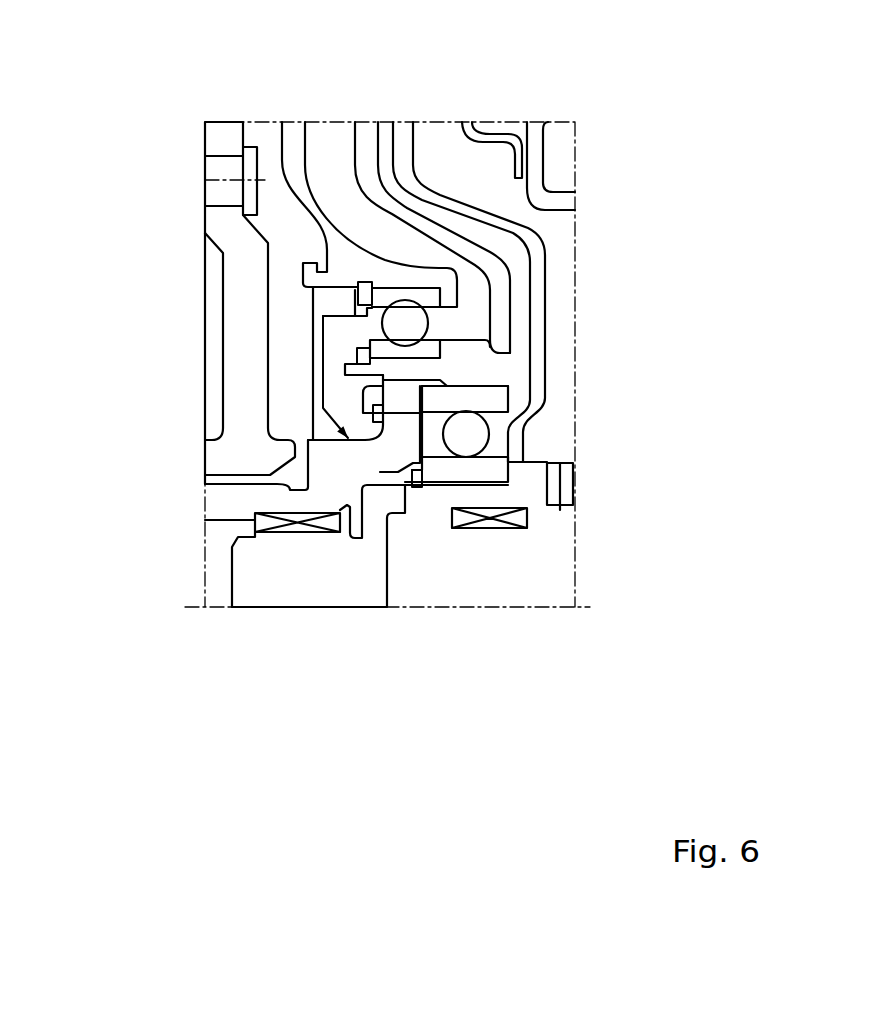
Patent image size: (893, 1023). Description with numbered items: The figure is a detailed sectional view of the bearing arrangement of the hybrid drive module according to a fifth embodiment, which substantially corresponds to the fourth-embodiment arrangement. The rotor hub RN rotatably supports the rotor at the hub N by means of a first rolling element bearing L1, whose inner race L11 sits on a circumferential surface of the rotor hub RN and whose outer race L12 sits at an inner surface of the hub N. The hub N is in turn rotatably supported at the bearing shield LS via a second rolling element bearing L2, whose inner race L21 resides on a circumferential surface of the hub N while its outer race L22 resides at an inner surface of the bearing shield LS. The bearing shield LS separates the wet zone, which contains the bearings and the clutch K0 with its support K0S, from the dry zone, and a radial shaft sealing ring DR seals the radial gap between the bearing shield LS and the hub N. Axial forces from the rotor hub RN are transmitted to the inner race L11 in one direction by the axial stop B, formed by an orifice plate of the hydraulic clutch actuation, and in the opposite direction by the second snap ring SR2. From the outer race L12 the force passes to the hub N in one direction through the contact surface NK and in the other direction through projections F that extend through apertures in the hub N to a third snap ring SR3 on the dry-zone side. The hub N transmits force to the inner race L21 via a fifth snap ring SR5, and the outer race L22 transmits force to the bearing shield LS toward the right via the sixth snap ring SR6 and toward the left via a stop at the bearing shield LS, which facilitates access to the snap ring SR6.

The bearing shield LS is at (293, 165).
The sixth snap ring SR6 is at (364, 285).
The outer race L22 is at (435, 298).
The clutch K0 support / housing K0S is at (478, 217).
The second rolling element bearing L2 is at (440, 320).
The inner race L21 is at (428, 352).
The contact surface NK is at (432, 403).
The outer race L12 is at (488, 400).
The axial stop B is at (527, 462).
The inner race L11 is at (508, 482).
The fifth snap ring SR5 is at (358, 350).
The projections F is at (373, 398).
The radial shaft sealing ring DR is at (313, 392).
The third snap ring SR3 is at (378, 422).
The rotor hub RN is at (262, 592).
The hub N is at (328, 490).
The second snap ring SR2 is at (415, 487).
The first rolling element bearing L1 is at (470, 487).